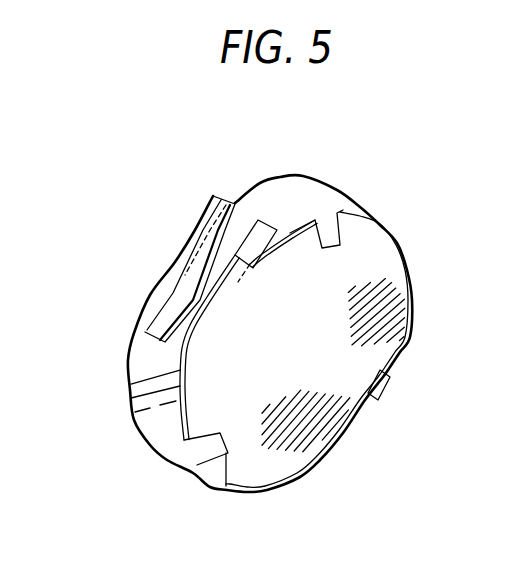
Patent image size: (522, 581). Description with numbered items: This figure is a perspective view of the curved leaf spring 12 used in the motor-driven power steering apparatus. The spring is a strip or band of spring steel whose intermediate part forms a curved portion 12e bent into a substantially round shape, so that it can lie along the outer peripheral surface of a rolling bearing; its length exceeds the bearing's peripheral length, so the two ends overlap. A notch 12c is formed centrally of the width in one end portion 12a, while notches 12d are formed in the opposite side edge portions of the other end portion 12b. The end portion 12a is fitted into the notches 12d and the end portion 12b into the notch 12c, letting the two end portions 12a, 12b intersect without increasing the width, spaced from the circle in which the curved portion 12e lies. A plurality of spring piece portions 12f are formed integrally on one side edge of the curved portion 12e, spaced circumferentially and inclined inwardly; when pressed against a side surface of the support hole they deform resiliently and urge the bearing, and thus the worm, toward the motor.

The curved leaf spring 12 is at (298, 487).
The one end portion 12a is at (262, 218).
The other end portion 12b is at (152, 322).
The notch 12c is at (185, 290).
The notches 12d is at (190, 243).
The curved portion 12e is at (370, 402).
The spring piece portions 12f is at (342, 250).